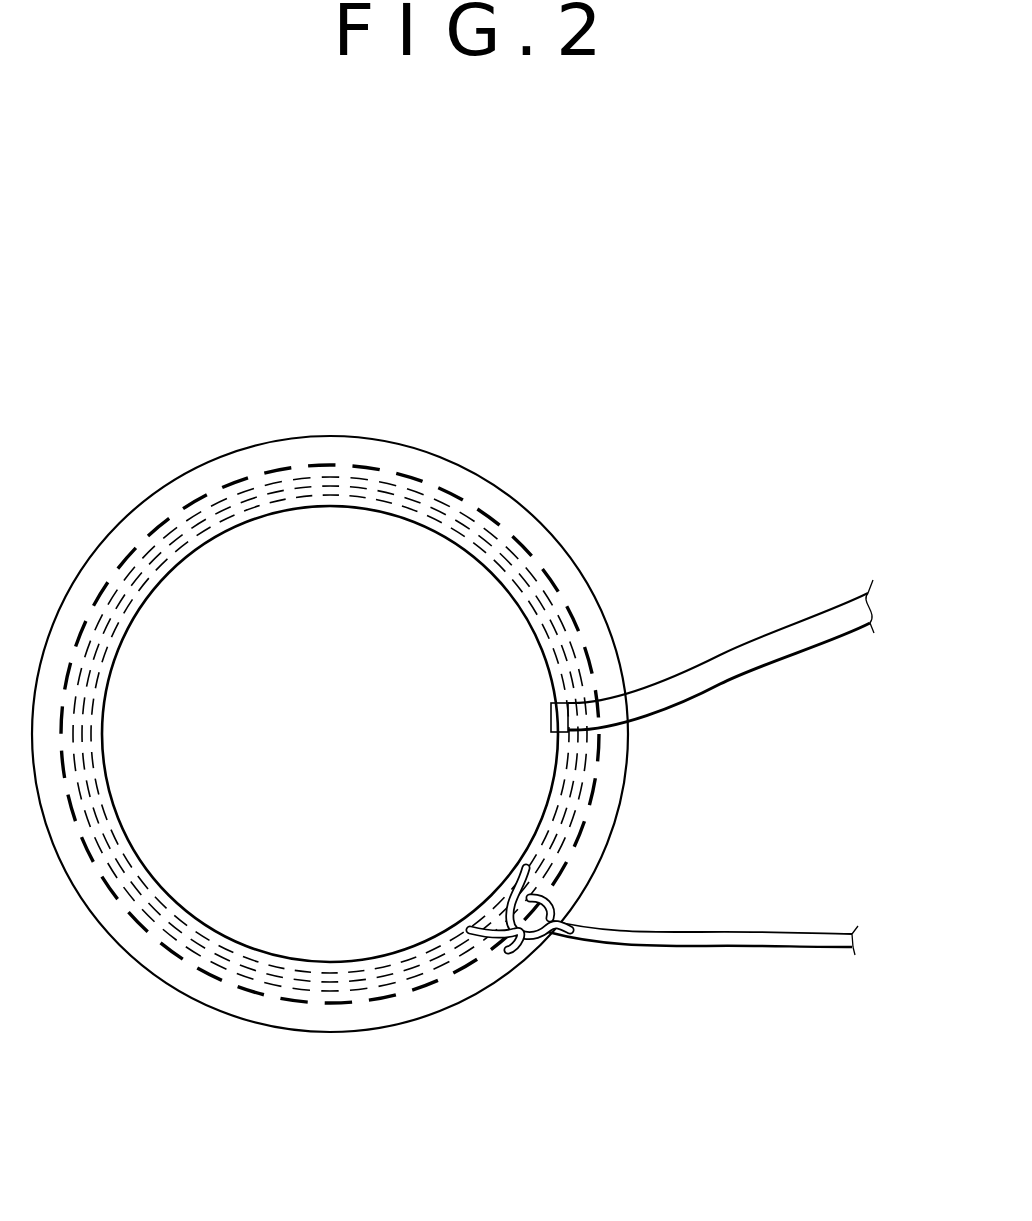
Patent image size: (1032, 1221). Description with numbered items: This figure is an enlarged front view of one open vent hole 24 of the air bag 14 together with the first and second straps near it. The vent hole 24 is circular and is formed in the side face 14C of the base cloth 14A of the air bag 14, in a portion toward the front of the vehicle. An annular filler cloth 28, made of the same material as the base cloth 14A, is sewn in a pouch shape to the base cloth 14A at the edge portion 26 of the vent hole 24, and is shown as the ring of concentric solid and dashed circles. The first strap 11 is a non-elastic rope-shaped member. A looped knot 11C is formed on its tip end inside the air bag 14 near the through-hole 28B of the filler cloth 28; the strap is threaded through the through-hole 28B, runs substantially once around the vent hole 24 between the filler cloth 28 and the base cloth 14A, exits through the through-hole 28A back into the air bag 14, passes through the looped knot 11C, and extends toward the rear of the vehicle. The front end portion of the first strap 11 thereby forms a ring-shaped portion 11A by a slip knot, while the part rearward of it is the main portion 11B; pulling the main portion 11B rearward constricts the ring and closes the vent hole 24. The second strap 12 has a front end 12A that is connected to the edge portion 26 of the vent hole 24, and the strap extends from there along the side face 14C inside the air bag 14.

The first strap 11 is at (745, 948).
The ring-shaped portion 11A is at (173, 550).
The main portion 11B is at (710, 932).
The looped knot 11C is at (479, 909).
The second strap 12 is at (713, 654).
The front end 12A is at (553, 712).
The air bag 14 is at (423, 496).
The base cloth 14A is at (690, 497).
The side face 14C is at (590, 417).
The vent hole 24 is at (353, 727).
The edge portion 26 is at (494, 574).
The annular filler cloth 28 is at (434, 450).
The through-hole 28A is at (518, 876).
The through-hole 28B is at (470, 928).